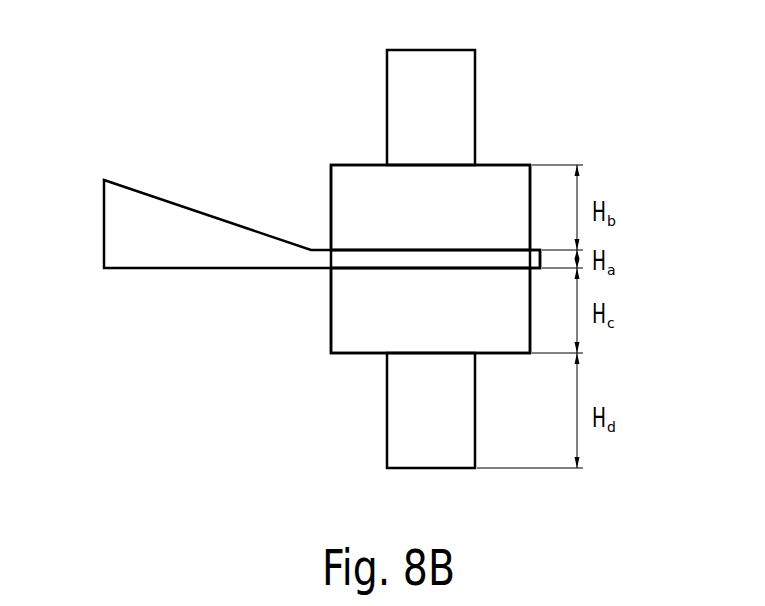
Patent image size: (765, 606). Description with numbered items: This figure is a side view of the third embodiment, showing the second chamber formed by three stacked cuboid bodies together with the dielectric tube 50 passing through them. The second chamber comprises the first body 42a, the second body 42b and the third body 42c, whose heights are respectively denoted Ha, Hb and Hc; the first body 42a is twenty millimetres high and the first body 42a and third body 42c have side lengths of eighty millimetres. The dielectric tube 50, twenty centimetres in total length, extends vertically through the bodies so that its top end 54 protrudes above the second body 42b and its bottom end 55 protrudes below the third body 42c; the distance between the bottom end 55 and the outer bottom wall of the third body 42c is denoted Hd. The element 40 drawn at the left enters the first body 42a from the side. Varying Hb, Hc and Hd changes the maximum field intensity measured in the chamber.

The wedge-shaped insert element 40 is at (90, 211).
The first body 42a is at (350, 258).
The second body 42b is at (350, 174).
The third body 42c is at (350, 345).
The dielectric tube 50 is at (494, 148).
The top end 54 is at (432, 50).
The bottom end 55 is at (435, 468).